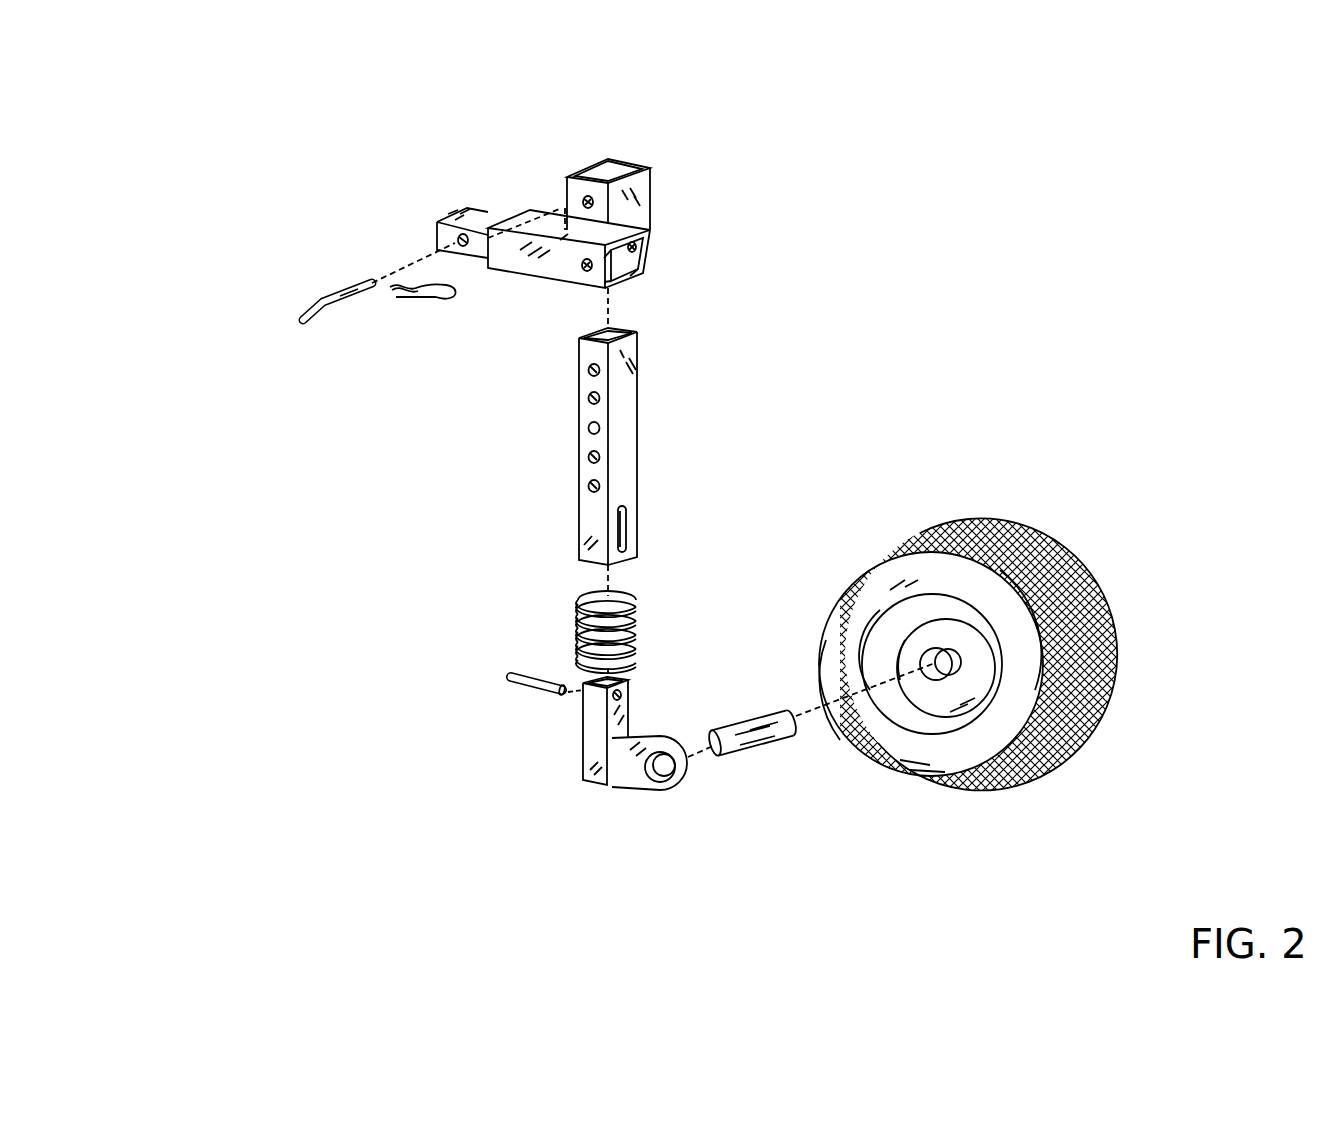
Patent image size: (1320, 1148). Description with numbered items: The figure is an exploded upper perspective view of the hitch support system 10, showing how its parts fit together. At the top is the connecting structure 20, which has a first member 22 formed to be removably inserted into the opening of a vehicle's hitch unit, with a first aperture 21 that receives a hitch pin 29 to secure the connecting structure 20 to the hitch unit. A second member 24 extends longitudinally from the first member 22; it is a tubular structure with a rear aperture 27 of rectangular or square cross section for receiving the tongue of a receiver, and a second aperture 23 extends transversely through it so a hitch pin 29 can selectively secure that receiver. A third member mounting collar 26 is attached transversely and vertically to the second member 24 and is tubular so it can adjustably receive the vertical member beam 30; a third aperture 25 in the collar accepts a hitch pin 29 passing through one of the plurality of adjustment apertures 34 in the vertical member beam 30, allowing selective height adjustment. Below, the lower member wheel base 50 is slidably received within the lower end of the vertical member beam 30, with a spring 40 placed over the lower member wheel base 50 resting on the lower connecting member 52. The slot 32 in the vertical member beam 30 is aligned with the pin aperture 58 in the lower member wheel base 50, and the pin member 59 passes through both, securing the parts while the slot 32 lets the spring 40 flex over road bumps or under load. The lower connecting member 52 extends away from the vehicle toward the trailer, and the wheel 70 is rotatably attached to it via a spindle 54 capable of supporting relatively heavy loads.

The hitch support system 10 is at (1087, 217).
The connecting structure 20 is at (650, 227).
The first aperture 21 is at (463, 240).
The first member 22 is at (453, 217).
The second aperture 23 is at (532, 280).
The second member 24 is at (605, 288).
The third aperture 25 is at (588, 202).
The third member mounting collar 26 is at (650, 168).
The rear aperture 27 is at (632, 247).
The hitch pin 29 is at (303, 318).
The vertical member beam 30 is at (617, 448).
The slot 32 is at (622, 523).
The adjustment apertures 34 is at (593, 427).
The spring 40 is at (577, 607).
The lower member wheel base 50 is at (590, 757).
The lower connecting member 52 is at (630, 785).
The spindle 54 is at (750, 748).
The pin aperture 58 is at (620, 692).
The pin member 59 is at (507, 683).
The wheel 70 is at (1020, 537).